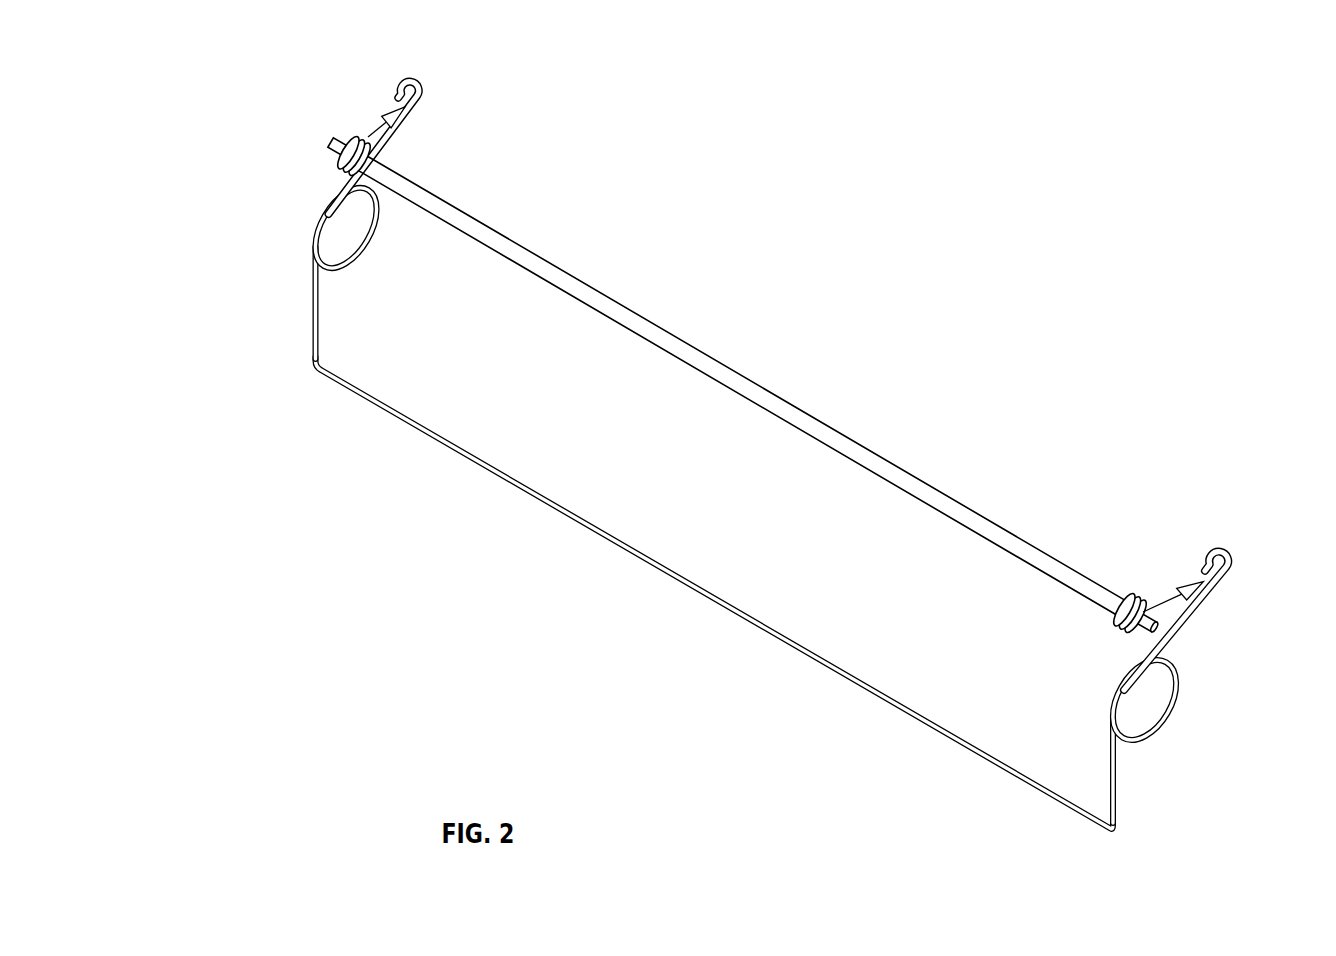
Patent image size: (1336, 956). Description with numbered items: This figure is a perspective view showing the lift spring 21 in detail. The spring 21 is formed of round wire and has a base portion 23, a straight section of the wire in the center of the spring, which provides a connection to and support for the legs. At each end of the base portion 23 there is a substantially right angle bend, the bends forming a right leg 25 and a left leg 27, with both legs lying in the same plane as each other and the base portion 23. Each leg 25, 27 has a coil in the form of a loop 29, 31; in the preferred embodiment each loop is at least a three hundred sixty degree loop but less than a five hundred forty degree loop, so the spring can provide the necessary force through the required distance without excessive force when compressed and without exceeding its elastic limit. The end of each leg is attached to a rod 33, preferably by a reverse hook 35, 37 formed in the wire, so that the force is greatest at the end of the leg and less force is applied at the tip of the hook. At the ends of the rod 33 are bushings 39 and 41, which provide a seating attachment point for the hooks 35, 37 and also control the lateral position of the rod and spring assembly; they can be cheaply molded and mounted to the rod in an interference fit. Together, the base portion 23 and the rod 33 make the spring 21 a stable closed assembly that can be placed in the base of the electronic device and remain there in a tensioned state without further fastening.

The lift spring 21 is at (257, 207).
The base portion 23 is at (648, 565).
The right leg 25 is at (312, 318).
The left leg 27 is at (1115, 780).
The loop 29 is at (367, 252).
The loop 31 is at (1170, 718).
The rod 33 is at (685, 343).
The hook 35 is at (408, 80).
The hook 37 is at (1232, 559).
The bushing 39 is at (345, 135).
The bushing 41 is at (1132, 605).